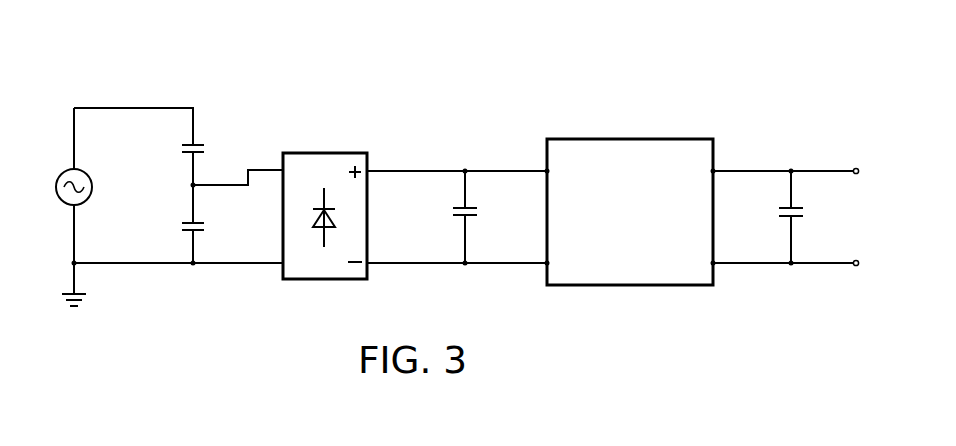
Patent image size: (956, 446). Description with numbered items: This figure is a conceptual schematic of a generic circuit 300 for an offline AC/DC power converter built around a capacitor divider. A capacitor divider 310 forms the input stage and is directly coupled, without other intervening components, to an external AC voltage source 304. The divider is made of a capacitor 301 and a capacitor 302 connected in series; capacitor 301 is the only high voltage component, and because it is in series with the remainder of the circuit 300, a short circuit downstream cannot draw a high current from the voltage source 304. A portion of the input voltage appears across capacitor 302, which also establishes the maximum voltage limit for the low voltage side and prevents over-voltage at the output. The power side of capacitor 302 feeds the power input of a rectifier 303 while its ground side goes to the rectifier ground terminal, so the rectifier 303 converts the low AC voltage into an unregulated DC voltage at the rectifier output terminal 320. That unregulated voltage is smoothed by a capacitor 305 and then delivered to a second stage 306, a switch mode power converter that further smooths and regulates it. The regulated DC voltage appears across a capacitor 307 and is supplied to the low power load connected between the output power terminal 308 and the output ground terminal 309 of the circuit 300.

The generic circuit 300 is at (512, 87).
The capacitor 301 is at (199, 144).
The capacitor 302 is at (185, 222).
The rectifier 303 is at (303, 282).
The AC voltage source 304 is at (64, 203).
The capacitor 305 is at (455, 216).
The second stage 306 is at (653, 139).
The capacitor 307 is at (782, 215).
The output power terminal 308 is at (855, 168).
The output ground terminal 309 is at (823, 265).
The capacitor divider 310 is at (194, 100).
The rectifier output terminal 320 is at (395, 170).